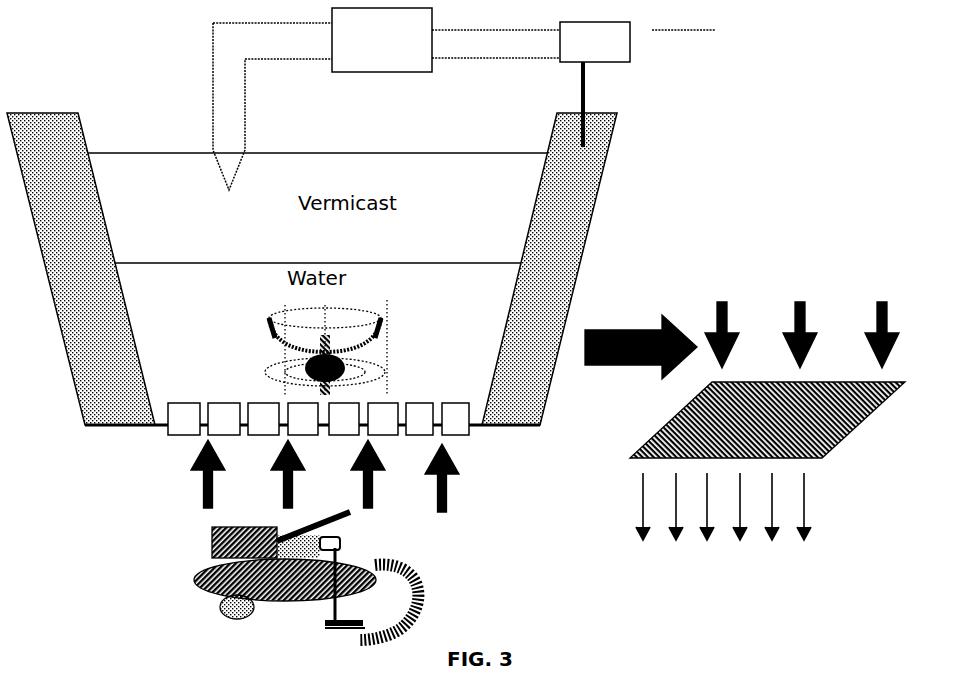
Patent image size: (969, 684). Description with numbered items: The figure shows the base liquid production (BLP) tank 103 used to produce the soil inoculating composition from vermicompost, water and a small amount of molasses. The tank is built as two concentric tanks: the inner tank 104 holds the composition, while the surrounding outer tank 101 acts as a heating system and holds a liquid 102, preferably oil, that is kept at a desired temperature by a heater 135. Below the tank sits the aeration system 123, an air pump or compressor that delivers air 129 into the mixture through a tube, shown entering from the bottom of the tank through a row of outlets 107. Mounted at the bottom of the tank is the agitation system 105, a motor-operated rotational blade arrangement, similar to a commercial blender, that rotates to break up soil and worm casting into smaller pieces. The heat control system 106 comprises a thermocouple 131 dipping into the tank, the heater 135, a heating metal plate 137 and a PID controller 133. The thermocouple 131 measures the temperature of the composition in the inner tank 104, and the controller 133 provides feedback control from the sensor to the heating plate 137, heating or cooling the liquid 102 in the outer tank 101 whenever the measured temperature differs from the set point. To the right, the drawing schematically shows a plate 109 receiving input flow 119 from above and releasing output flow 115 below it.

The outer tank 101 is at (72, 385).
The liquid 102 is at (583, 170).
The base liquid production (BLP) tank 103 is at (548, 147).
The inner tank 104 is at (110, 428).
The agitation system 105 is at (387, 335).
The heat control system 106 is at (705, 32).
The air diffuser 107 is at (453, 437).
The filter plate 109 is at (843, 438).
The filtered water flow 115 is at (817, 527).
The input flow 119 is at (875, 292).
The aeration system 123 is at (190, 577).
The air 129 is at (455, 492).
The thermocouple 131 is at (245, 100).
The PID controller 133 is at (375, 72).
The heater 135 is at (632, 42).
The heating metal plate 137 is at (585, 88).